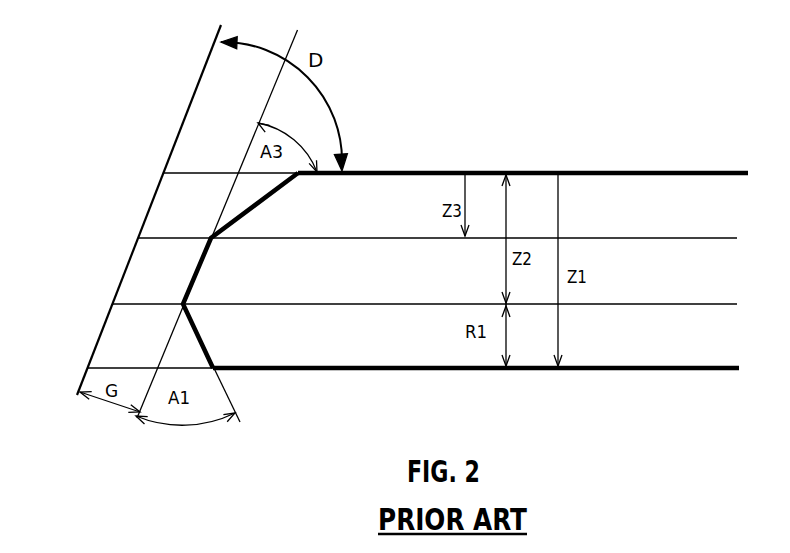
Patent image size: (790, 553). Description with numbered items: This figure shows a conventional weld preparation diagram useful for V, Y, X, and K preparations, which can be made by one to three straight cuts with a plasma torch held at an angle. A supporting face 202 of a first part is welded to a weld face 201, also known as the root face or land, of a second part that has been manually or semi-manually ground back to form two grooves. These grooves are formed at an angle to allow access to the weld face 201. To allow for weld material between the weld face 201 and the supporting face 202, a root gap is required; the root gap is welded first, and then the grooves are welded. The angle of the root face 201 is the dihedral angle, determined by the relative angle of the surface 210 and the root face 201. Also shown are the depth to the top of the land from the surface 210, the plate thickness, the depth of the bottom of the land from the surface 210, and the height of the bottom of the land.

The weld face 201 is at (194, 272).
The supporting face 202 is at (193, 98).
The surface 210 is at (602, 171).